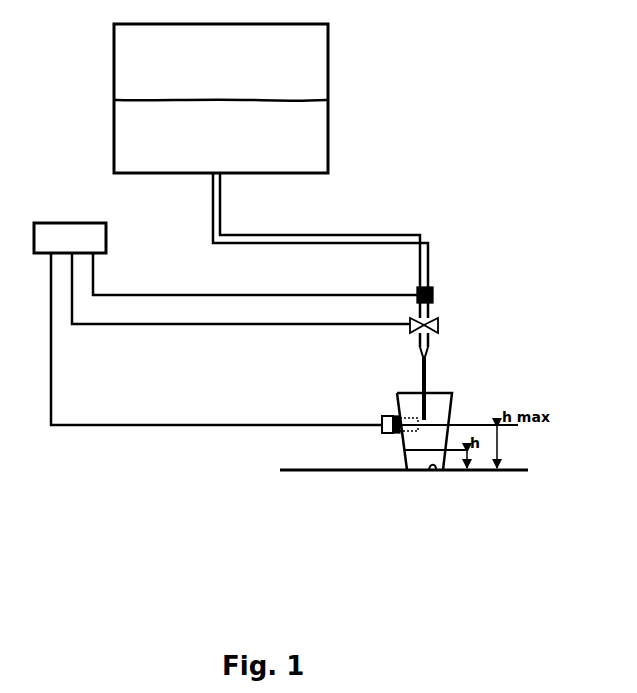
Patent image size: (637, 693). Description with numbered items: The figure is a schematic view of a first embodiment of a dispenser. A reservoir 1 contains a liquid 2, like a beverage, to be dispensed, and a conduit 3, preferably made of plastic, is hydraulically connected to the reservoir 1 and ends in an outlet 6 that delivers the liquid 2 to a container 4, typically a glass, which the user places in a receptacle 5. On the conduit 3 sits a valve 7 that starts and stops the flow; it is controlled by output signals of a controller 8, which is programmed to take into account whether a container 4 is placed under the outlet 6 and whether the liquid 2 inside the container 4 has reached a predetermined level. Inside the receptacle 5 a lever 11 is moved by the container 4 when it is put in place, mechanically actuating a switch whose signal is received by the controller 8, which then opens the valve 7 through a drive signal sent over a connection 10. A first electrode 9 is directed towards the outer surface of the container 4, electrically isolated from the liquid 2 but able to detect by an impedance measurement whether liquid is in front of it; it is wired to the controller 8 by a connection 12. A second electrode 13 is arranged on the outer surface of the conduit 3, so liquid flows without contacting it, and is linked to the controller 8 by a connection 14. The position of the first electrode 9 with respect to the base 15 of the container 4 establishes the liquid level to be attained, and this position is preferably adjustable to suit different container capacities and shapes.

The reservoir 1 is at (328, 52).
The liquid 2 is at (296, 128).
The conduit 3 is at (290, 235).
The container 4 is at (450, 393).
The receptacle 5 is at (462, 352).
The outlet 6 is at (422, 347).
The valve 7 is at (437, 320).
The controller 8 is at (48, 222).
The first electrode 9 is at (398, 435).
The connection 10 is at (183, 324).
The lever 11 is at (381, 441).
The connection 12 is at (153, 425).
The second electrode 13 is at (433, 288).
The connection 14 is at (222, 295).
The base 15 is at (434, 472).